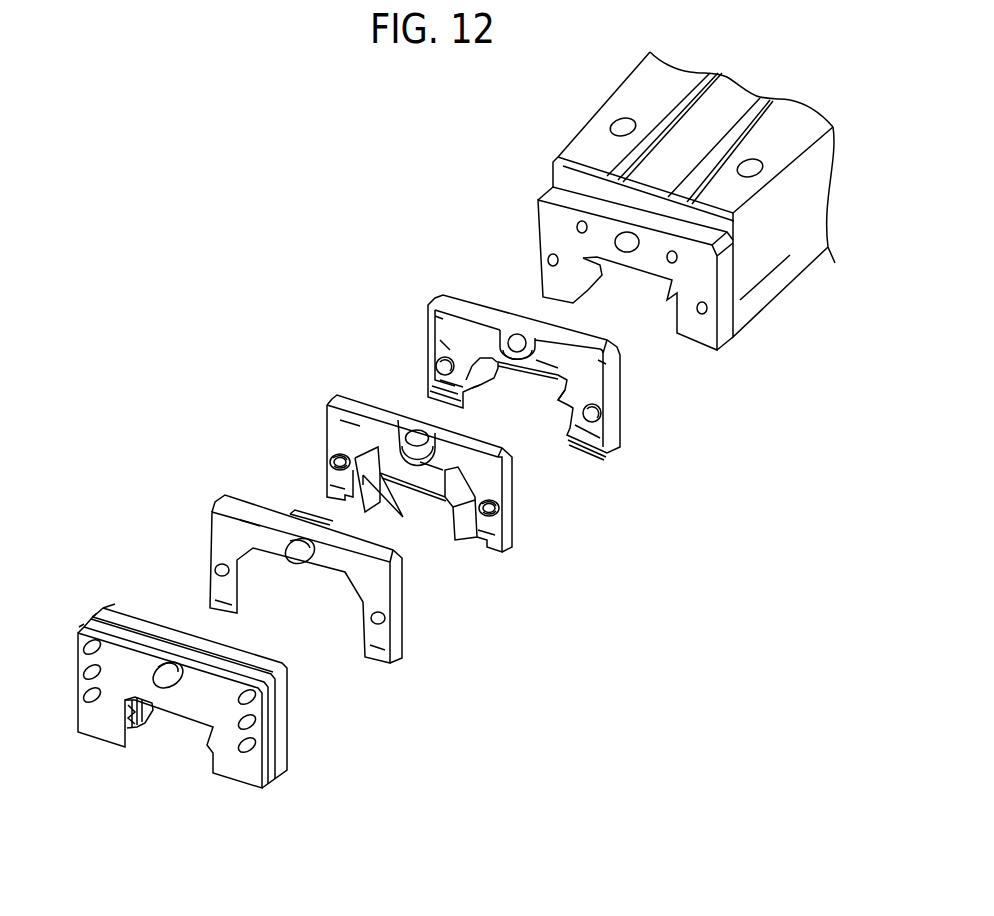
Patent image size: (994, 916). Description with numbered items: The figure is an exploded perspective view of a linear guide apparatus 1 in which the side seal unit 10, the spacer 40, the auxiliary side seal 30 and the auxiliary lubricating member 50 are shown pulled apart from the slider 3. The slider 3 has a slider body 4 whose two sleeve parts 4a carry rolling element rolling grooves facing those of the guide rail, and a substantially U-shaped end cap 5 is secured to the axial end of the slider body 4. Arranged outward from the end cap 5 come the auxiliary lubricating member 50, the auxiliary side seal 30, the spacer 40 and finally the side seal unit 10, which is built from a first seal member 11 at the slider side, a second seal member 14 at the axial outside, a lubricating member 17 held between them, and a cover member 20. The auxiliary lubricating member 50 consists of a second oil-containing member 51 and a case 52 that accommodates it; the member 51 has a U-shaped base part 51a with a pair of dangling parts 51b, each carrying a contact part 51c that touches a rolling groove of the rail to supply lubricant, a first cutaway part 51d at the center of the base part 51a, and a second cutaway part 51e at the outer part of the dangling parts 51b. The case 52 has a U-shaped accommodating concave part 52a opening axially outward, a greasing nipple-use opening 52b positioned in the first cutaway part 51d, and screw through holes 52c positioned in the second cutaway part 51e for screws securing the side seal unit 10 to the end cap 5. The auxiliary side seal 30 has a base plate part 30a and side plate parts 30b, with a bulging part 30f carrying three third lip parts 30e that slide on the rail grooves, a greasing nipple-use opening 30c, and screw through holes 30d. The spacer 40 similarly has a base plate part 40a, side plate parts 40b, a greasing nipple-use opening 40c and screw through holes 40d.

The linear guide apparatus 1 is at (323, 205).
The slider 3 is at (768, 322).
The slider body 4 is at (693, 130).
The sleeve parts 4a is at (780, 265).
The end cap 5 is at (556, 193).
The side seal unit 10 is at (288, 785).
The first seal member 11 is at (118, 604).
The second seal member 14 is at (79, 627).
The lubricating member 17 is at (91, 616).
The cover member 20 is at (97, 738).
The auxiliary side seal 30 is at (515, 565).
The base plate part 30a is at (368, 432).
The side plate parts 30b is at (333, 482).
The greasing nipple-use opening 30c is at (410, 436).
The screw through hole 30d is at (331, 458).
The third lip parts 30e is at (405, 516).
The bulging part 30f is at (450, 462).
The spacer 40 is at (404, 668).
The base plate part 40a is at (262, 537).
The side plate parts 40b is at (220, 594).
The greasing nipple-use opening 40c is at (300, 560).
The screw through hole 40d is at (218, 563).
The auxiliary lubricating member 50 is at (622, 462).
The second oil-containing member 51 is at (576, 420).
The base part 51a is at (520, 370).
The dangling parts 51b is at (449, 358).
The contact part 51c is at (484, 372).
The first cutaway part 51d is at (542, 363).
The second cutaway part 51e is at (447, 360).
The case 52 is at (617, 392).
The second oil-containing member accommodating concave part 52a is at (430, 311).
The greasing nipple-use opening 52b is at (516, 330).
The screw through holes 52c is at (437, 362).